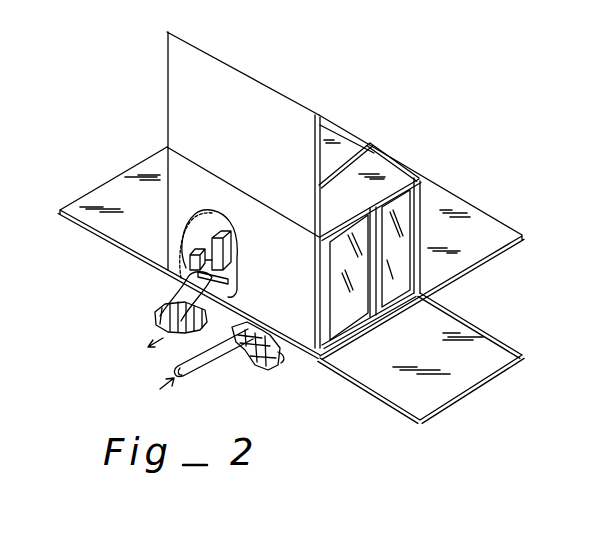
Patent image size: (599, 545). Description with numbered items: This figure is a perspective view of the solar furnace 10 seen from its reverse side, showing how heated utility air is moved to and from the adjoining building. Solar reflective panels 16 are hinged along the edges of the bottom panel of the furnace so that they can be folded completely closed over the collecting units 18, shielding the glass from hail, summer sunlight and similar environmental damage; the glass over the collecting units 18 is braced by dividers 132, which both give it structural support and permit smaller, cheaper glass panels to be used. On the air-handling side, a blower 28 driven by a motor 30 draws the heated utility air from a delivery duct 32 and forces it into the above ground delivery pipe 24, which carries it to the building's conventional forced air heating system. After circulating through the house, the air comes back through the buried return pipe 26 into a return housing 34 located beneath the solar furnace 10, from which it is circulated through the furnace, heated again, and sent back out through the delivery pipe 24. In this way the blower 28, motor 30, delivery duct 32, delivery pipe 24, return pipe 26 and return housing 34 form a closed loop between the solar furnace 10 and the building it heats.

The solar furnace 10 is at (355, 95).
The solar reflective panels 16 is at (240, 74).
The collecting units 18 is at (340, 152).
The dividers 132 is at (370, 304).
The delivery pipe 24 is at (185, 294).
The return pipe 26 is at (192, 368).
The blower 28 is at (232, 285).
The motor 30 is at (190, 258).
The delivery duct 32 is at (228, 255).
The return housing 34 is at (277, 367).